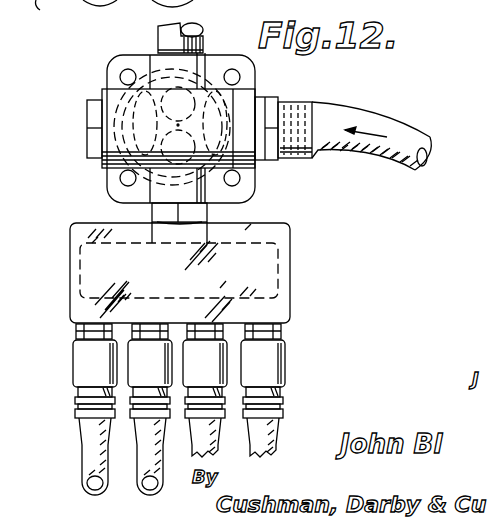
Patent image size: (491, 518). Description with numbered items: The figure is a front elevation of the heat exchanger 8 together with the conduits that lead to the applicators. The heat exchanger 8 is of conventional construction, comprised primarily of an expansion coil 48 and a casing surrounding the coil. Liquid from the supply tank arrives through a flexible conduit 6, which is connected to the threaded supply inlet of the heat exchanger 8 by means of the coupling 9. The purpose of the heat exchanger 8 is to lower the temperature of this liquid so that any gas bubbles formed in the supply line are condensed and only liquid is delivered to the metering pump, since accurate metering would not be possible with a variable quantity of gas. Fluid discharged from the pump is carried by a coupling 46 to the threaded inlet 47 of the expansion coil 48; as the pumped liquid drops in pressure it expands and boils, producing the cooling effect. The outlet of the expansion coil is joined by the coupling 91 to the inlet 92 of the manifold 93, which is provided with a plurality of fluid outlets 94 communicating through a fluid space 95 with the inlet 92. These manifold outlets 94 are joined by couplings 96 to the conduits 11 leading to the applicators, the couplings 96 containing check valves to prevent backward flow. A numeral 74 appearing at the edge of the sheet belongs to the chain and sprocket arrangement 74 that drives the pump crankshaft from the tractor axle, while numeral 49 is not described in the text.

The flexible conduit 6 is at (393, 122).
The heat exchanger 8 is at (113, 116).
The coupling 9 is at (281, 103).
The conduits 11 is at (148, 443).
The coupling 46 is at (158, 43).
The threaded inlet 47 is at (206, 54).
The expansion coil 48 is at (101, 96).
The inlet nut 49 is at (101, 163).
The chain and sprocket arrangement 74 is at (113, 17).
The coupling 91 is at (152, 213).
The inlet 92 is at (208, 215).
The manifold 93 is at (286, 262).
The fluid outlets 94 is at (74, 327).
The fluid space 95 is at (258, 278).
The couplings 96 is at (141, 363).